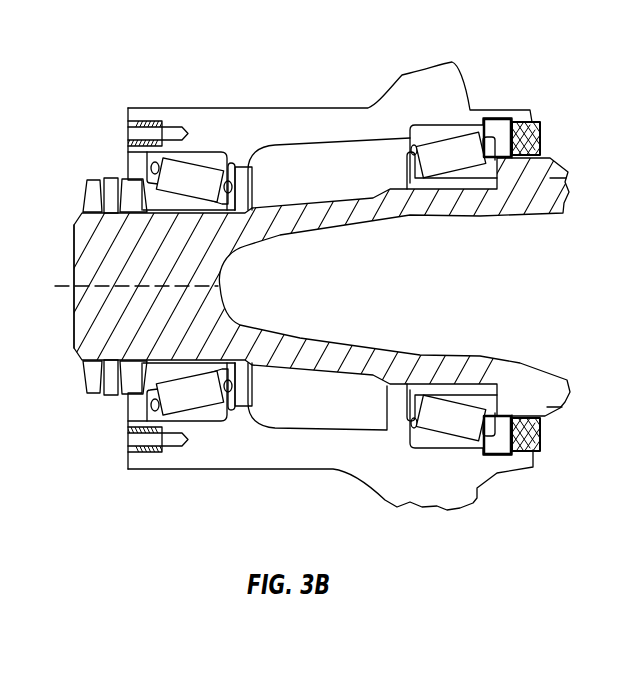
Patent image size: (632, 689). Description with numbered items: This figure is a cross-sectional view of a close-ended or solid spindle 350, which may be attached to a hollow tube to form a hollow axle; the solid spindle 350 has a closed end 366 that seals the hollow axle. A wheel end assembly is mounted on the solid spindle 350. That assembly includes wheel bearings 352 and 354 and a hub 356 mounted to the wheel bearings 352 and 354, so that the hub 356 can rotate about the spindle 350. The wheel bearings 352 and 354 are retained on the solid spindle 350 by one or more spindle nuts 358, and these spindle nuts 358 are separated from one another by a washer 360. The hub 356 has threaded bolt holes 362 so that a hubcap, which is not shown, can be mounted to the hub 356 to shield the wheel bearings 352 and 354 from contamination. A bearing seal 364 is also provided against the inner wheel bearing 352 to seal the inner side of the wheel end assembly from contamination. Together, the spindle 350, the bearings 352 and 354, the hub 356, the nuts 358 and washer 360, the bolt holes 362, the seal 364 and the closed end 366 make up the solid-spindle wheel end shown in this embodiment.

The solid spindle 350 is at (417, 353).
The wheel bearing 352 is at (463, 123).
The wheel bearing 354 is at (207, 150).
The hub 356 is at (385, 98).
The spindle nut 358 is at (110, 178).
The washer 360 is at (97, 177).
The threaded bolt hole 362 is at (147, 121).
The bearing seal 364 is at (541, 136).
The closed end 366 is at (74, 302).